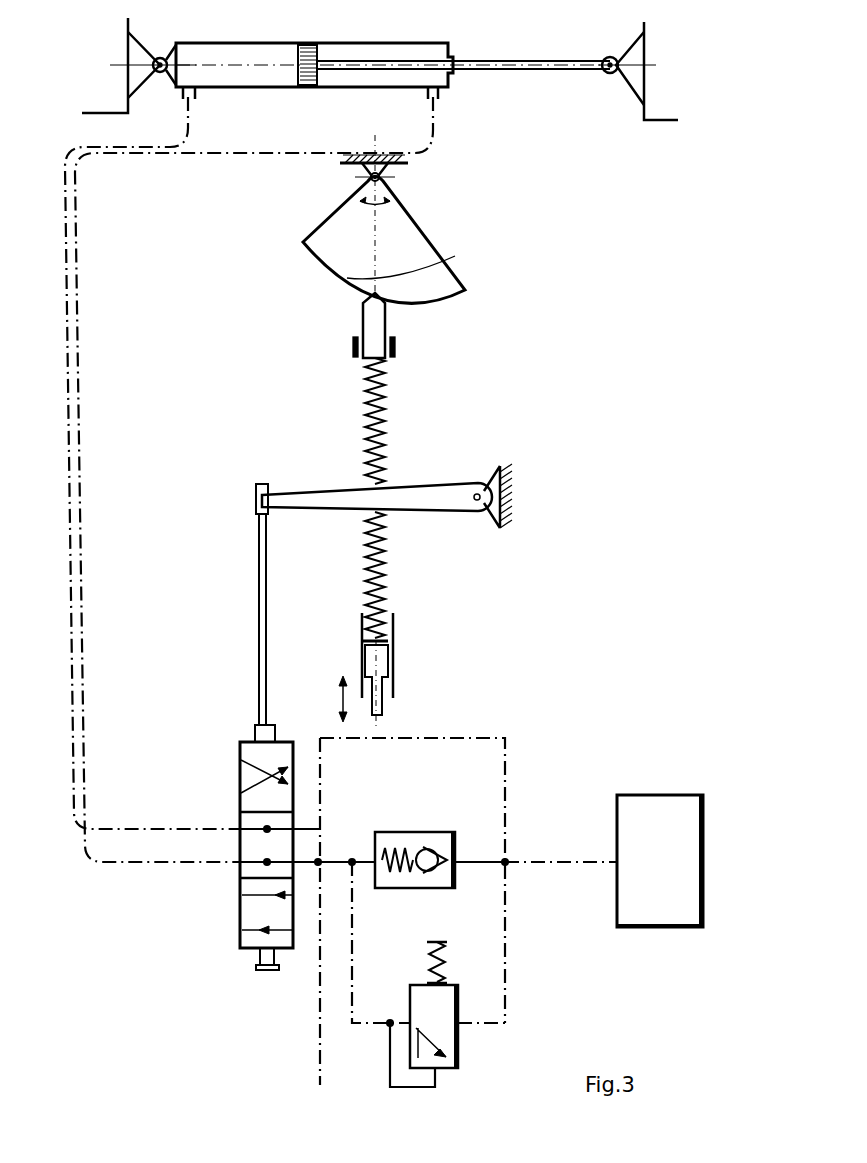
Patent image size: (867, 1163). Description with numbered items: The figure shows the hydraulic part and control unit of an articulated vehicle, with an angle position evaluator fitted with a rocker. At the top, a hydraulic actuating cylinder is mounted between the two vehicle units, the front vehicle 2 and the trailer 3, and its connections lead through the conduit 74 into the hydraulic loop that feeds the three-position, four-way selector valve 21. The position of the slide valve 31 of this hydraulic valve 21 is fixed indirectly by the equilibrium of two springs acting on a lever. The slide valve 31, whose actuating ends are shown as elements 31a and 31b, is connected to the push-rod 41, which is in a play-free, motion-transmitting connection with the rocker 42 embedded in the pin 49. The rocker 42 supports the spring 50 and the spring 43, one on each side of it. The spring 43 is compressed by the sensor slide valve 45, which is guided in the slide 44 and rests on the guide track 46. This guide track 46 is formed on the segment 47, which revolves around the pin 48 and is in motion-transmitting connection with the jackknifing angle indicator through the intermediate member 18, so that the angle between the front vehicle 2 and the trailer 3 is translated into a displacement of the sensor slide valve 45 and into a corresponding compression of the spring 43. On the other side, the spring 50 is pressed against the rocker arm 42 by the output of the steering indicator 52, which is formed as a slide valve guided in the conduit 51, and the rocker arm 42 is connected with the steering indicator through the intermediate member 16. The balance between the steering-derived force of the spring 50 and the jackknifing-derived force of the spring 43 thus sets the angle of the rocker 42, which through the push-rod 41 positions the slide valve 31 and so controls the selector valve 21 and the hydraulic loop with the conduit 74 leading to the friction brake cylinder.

The front vehicle 2 is at (128, 32).
The trailer 3 is at (648, 55).
The intermediate member 16 is at (383, 710).
The intermediate member 18 is at (343, 225).
The three-position, four-way selector valve 21 is at (240, 870).
The slide valve 31 is at (255, 735).
The upper valve actuating element 31a is at (258, 700).
The lower valve actuating element 31b is at (272, 970).
The push-rod 41 is at (258, 590).
The rocker 42 is at (410, 492).
The spring 43 is at (380, 430).
The slide 44 is at (396, 347).
The sensor slide valve 45 is at (385, 310).
The guide track 46 is at (455, 256).
The segment 47 is at (393, 190).
The pin 48 is at (385, 172).
The pin 49 is at (488, 512).
The spring 50 is at (385, 560).
The conduit 51 is at (395, 633).
The steering indicator 52 is at (385, 660).
The conduit 74 is at (318, 1040).